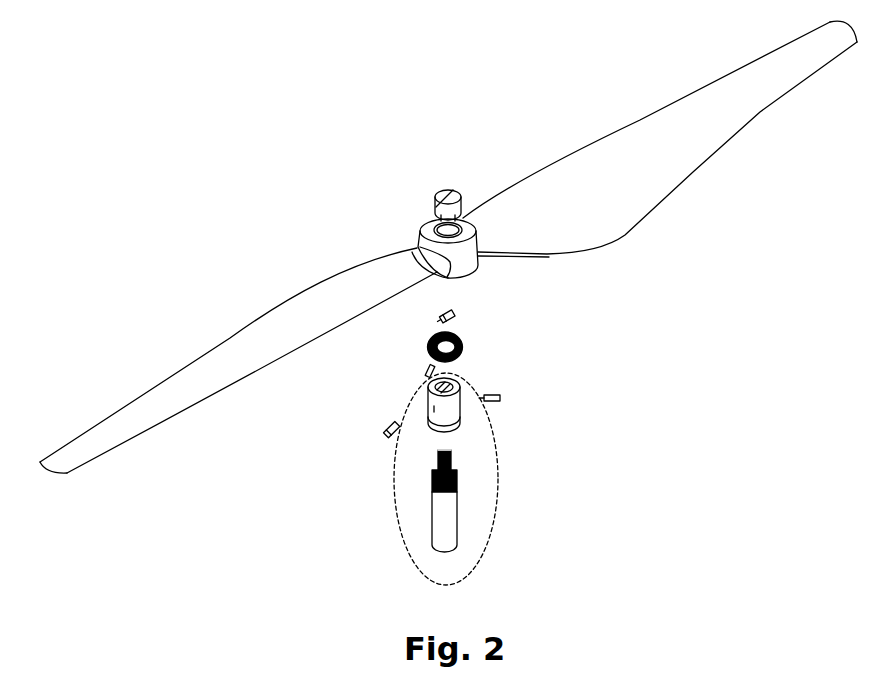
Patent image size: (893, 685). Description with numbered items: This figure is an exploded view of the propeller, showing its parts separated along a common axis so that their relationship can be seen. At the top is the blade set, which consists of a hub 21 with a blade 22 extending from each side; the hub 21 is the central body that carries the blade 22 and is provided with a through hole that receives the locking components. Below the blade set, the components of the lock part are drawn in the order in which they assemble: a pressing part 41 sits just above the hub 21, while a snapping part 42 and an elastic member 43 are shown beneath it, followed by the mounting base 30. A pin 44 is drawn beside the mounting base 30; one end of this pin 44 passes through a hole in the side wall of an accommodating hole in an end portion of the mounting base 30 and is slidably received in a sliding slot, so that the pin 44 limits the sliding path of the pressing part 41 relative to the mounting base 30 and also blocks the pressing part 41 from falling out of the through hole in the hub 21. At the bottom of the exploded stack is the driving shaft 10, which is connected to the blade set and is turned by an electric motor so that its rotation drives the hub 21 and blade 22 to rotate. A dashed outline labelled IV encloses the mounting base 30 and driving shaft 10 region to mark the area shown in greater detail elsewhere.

The driving shaft 10 is at (440, 515).
The hub 21 is at (415, 242).
The blade 22 is at (290, 325).
The mounting base 30 is at (448, 408).
The pressing part 41 is at (447, 200).
The snapping part 42 is at (456, 316).
The elastic member 43 is at (466, 349).
The pin 44 is at (383, 432).
The detail region IV is at (495, 458).